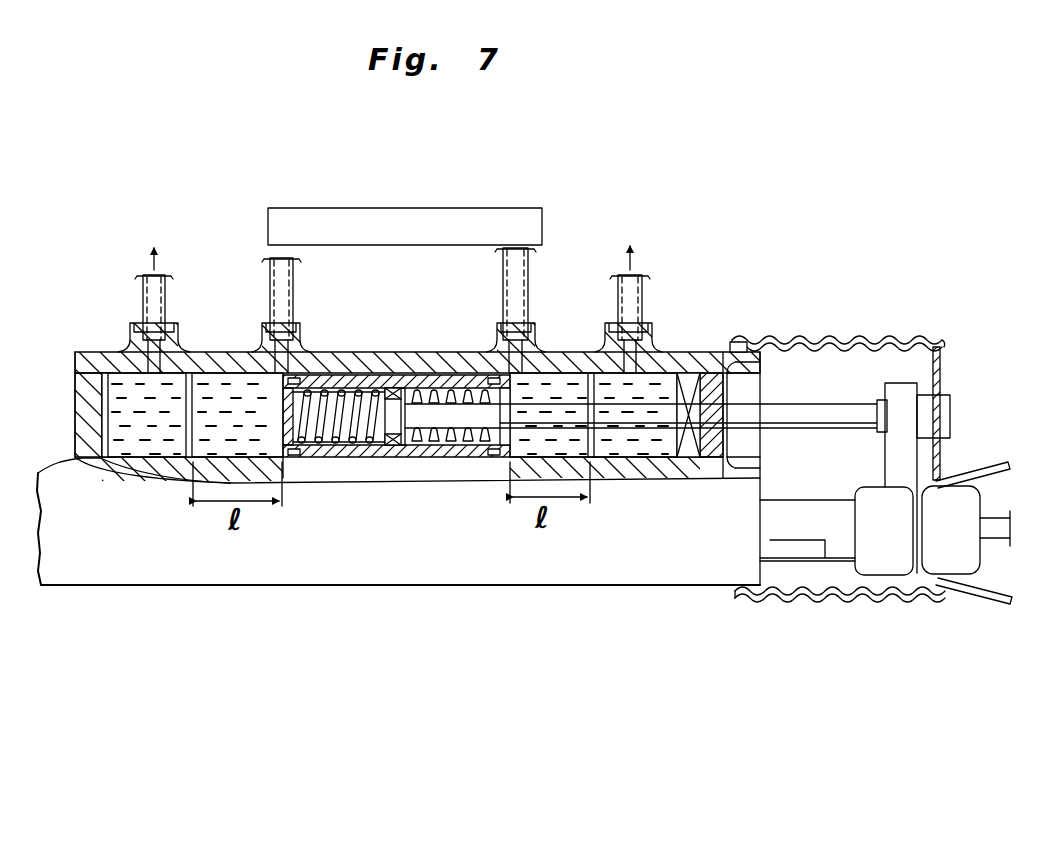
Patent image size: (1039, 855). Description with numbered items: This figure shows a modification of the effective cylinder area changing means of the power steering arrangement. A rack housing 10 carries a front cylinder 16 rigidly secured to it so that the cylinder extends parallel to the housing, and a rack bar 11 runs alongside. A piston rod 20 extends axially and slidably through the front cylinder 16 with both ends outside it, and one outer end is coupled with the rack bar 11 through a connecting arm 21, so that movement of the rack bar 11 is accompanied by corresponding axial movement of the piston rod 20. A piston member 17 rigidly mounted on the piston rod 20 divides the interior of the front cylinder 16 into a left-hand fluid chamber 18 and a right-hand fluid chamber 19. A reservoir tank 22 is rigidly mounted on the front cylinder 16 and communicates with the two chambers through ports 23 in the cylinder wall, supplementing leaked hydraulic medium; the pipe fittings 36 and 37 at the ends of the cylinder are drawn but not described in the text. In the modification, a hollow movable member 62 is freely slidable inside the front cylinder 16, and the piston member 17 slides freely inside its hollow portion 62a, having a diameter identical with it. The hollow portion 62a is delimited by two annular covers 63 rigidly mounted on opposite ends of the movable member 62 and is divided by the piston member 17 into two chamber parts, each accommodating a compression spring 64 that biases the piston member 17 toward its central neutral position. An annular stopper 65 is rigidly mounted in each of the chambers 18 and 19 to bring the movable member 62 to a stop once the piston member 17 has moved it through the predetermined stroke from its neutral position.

The rack housing 10 is at (275, 585).
The rack bar 11 is at (826, 562).
The front cylinder 16 is at (218, 368).
The piston member 17 is at (400, 450).
The left-hand fluid chamber 18 is at (232, 442).
The right-hand fluid chamber 19 is at (552, 450).
The piston rod 20 is at (818, 418).
The connecting arm 21 is at (907, 461).
The reservoir tank 22 is at (548, 214).
The ports 23 is at (272, 362).
The vent pipe 36 is at (152, 291).
The vent pipe 37 is at (630, 302).
The movable member 62 is at (372, 457).
The hollow portion 62a is at (385, 440).
The annular cover 63 is at (285, 455).
The compression spring 64 is at (358, 390).
The stopper 65 is at (189, 460).